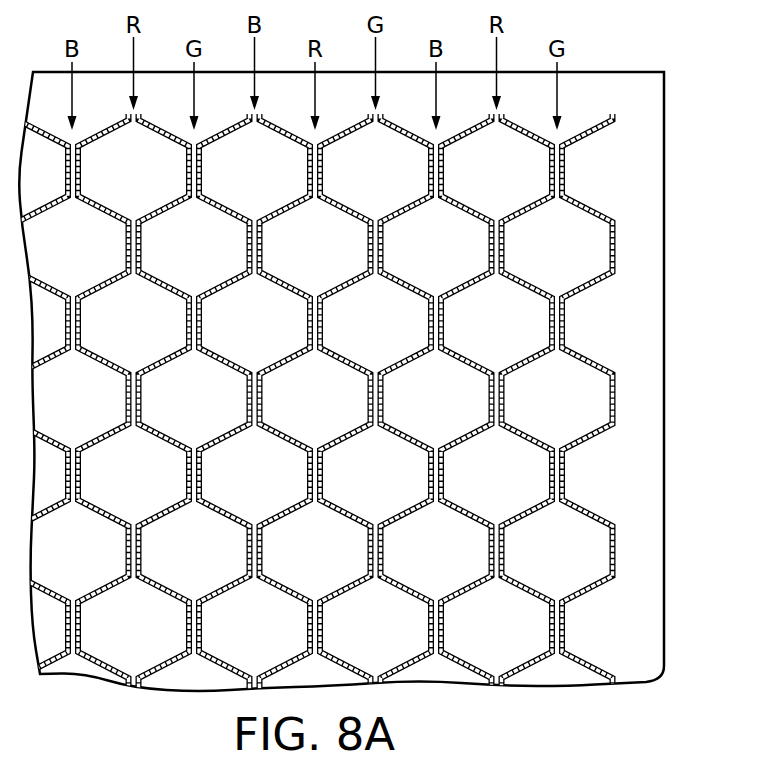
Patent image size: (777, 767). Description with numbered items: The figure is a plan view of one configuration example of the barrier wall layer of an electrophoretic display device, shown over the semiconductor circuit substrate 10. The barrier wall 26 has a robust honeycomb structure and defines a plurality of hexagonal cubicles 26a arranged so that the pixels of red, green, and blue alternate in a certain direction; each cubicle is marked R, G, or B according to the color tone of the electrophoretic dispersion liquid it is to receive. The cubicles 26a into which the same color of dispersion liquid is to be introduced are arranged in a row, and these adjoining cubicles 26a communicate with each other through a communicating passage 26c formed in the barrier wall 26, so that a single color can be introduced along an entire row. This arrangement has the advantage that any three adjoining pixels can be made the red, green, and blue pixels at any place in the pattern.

The semiconductor circuit substrate 10 is at (621, 72).
The barrier wall 26 is at (614, 255).
The cubicle 26a is at (578, 228).
The communicating passage 26c is at (566, 167).